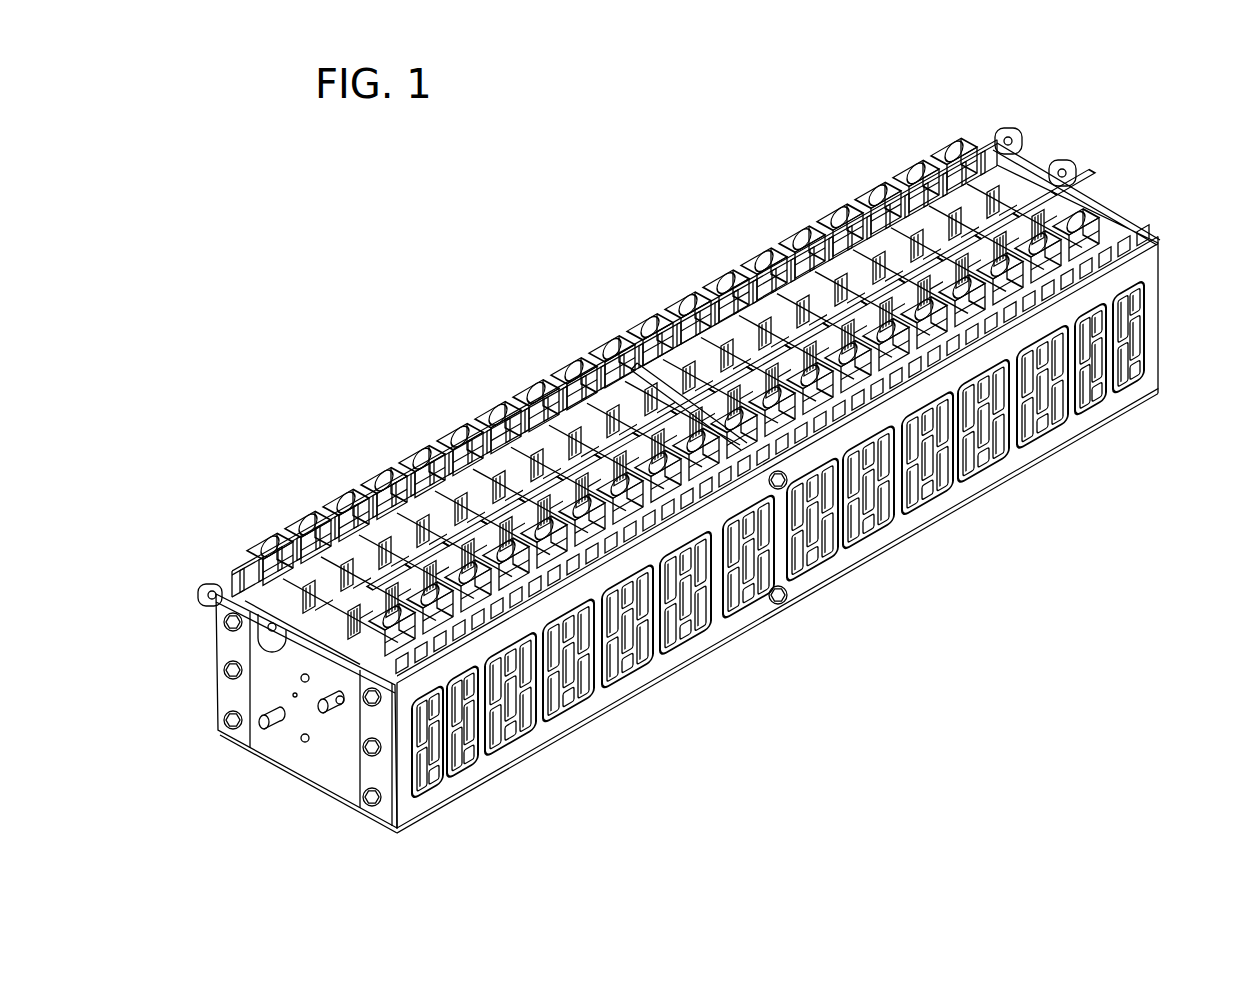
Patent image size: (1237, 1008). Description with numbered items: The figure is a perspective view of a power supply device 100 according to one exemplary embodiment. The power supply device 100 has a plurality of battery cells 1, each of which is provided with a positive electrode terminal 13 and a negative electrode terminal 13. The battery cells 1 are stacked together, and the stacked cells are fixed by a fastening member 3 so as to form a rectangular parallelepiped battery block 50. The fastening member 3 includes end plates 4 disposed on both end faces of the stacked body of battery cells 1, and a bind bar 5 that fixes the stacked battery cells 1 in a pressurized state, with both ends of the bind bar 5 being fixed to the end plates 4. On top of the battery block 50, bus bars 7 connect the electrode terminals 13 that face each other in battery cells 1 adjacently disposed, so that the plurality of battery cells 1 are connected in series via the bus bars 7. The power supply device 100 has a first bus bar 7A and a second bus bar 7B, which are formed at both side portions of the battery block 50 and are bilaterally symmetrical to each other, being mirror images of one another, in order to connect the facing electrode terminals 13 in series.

The power supply device 100 is at (413, 243).
The battery block 50 is at (577, 317).
The battery cell 1 is at (935, 163).
The fastening member 3 is at (636, 841).
The end plate 4 is at (322, 757).
The bind bar 5 is at (742, 622).
The bus bar 7 is at (877, 142).
The first bus bar 7A is at (888, 222).
The second bus bar 7B is at (820, 248).
The electrode terminal 13 is at (262, 557).